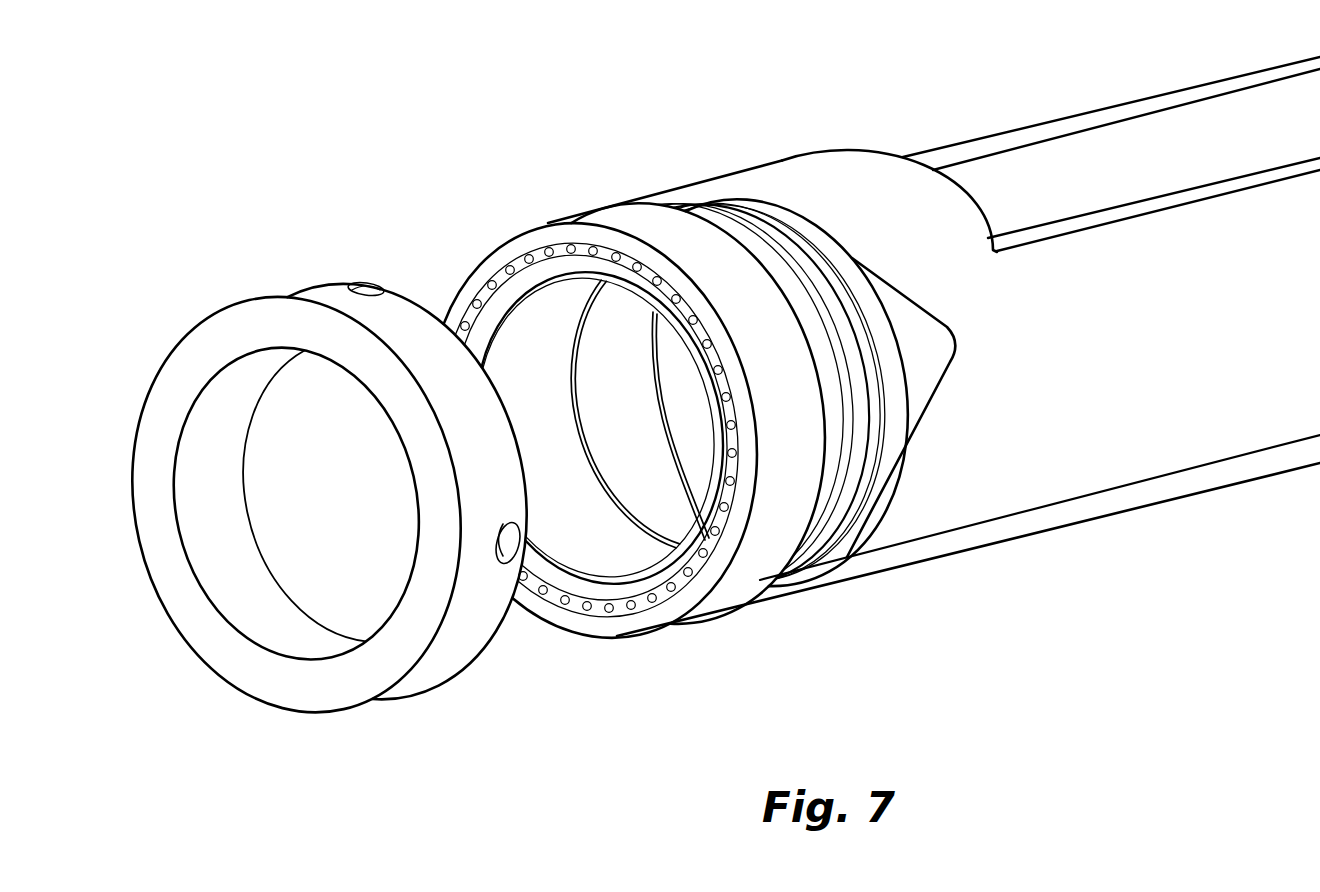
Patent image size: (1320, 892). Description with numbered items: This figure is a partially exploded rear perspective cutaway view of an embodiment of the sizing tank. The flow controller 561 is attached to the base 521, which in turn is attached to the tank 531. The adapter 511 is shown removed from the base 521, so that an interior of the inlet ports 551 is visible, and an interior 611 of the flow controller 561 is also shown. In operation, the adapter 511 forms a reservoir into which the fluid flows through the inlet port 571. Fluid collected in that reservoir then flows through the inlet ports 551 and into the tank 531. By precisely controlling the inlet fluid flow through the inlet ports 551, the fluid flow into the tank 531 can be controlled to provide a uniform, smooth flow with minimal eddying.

The adapter 511 is at (220, 332).
The inlet port 571 is at (364, 287).
The base 521 is at (665, 227).
The inlet ports 551 is at (553, 245).
The tank 531 is at (790, 177).
The flow controller 561 is at (898, 327).
The interior of the flow controller 611 is at (703, 445).